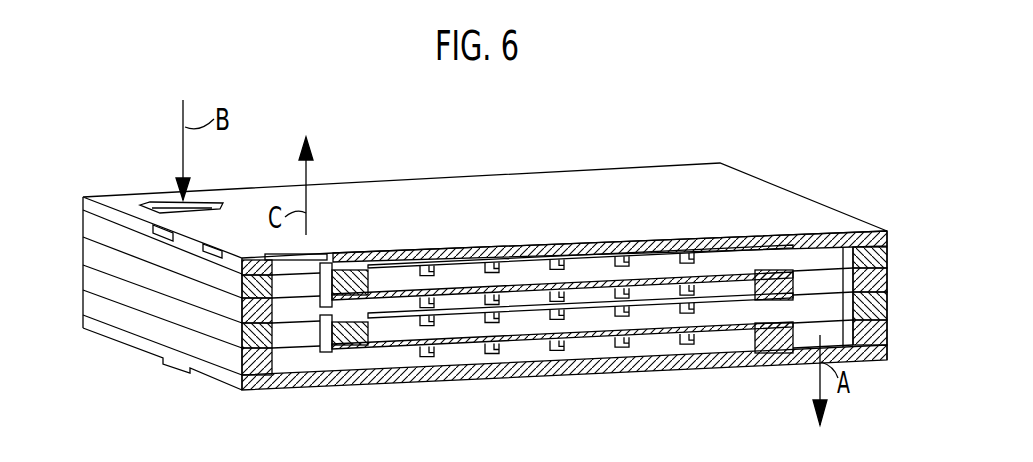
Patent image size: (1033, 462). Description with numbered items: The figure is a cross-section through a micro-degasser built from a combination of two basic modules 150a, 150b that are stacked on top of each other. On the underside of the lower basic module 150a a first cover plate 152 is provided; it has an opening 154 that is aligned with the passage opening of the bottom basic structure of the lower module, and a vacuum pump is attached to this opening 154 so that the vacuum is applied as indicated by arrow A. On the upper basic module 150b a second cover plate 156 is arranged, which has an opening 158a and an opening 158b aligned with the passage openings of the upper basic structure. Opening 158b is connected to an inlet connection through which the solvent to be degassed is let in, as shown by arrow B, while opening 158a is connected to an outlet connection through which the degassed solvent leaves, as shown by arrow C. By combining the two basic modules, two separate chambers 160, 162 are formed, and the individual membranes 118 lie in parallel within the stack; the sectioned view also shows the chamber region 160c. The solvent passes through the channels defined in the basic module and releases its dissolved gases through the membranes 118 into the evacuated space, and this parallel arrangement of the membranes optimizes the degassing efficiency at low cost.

The membranes 118 is at (573, 268).
The basic module 150a is at (895, 296).
The basic module 150b is at (893, 290).
The first cover plate 152 is at (229, 384).
The opening 154 is at (807, 350).
The second cover plate 156 is at (797, 200).
The opening 158a is at (318, 252).
The opening 158b is at (162, 200).
The chamber 160 is at (713, 283).
The contact carrier plate 160c is at (663, 317).
The chamber 162 is at (463, 298).